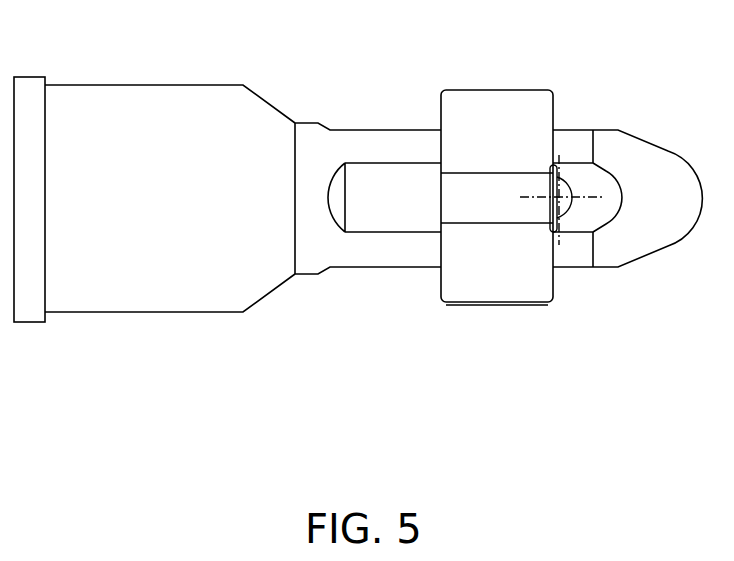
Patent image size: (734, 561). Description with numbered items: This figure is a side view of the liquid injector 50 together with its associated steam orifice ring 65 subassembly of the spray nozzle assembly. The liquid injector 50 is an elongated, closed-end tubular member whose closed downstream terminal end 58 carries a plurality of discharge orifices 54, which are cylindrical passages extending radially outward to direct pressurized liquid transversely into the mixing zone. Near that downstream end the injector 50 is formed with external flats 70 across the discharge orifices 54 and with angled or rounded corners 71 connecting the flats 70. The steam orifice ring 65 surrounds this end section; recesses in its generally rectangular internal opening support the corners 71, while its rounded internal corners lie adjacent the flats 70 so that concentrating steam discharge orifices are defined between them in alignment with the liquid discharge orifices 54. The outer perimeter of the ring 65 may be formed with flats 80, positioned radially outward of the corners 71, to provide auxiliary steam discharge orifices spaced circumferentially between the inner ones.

The liquid injector 50 is at (107, 84).
The corners 71 is at (346, 143).
The external flats 70 is at (375, 170).
The flats 80 is at (478, 103).
The steam orifice ring 65 is at (533, 88).
The closed downstream terminal end 58 is at (658, 158).
The discharge orifices 54 is at (572, 210).